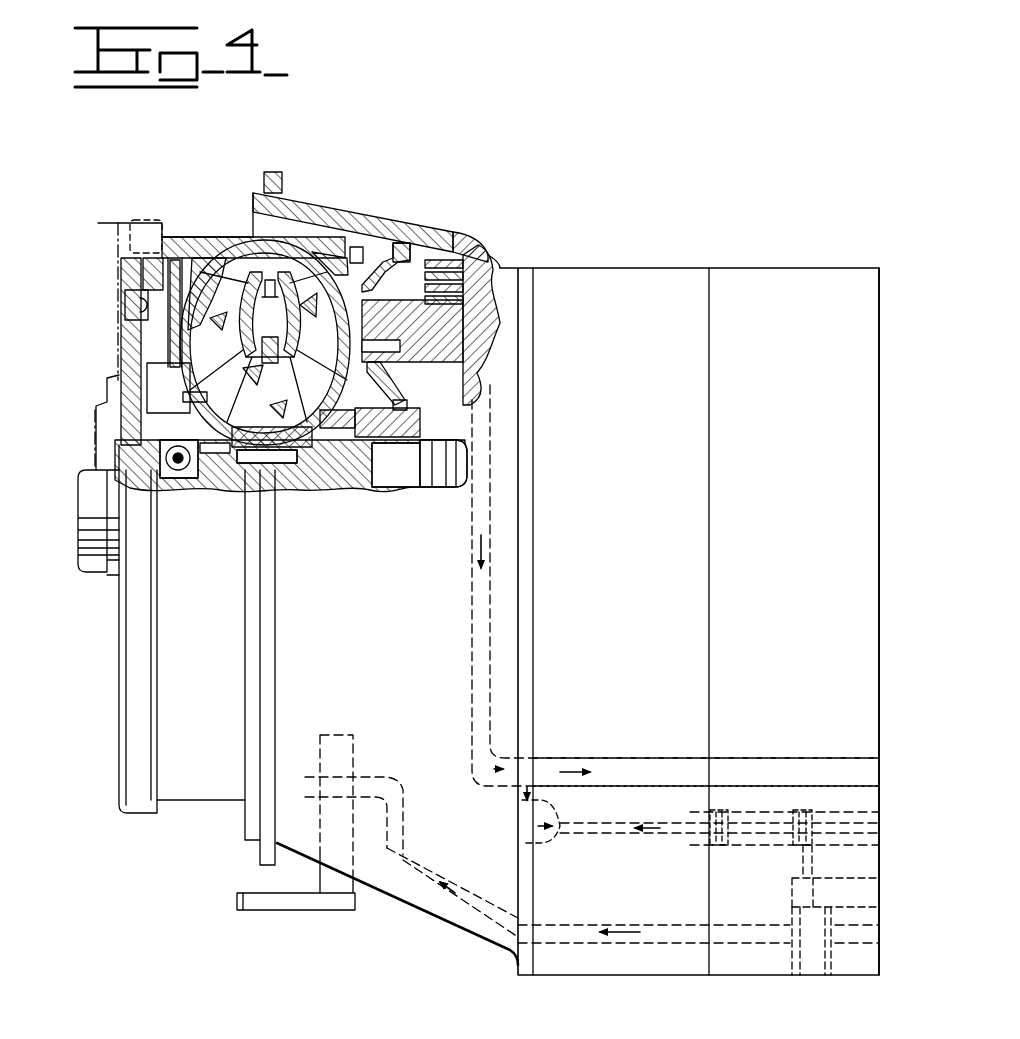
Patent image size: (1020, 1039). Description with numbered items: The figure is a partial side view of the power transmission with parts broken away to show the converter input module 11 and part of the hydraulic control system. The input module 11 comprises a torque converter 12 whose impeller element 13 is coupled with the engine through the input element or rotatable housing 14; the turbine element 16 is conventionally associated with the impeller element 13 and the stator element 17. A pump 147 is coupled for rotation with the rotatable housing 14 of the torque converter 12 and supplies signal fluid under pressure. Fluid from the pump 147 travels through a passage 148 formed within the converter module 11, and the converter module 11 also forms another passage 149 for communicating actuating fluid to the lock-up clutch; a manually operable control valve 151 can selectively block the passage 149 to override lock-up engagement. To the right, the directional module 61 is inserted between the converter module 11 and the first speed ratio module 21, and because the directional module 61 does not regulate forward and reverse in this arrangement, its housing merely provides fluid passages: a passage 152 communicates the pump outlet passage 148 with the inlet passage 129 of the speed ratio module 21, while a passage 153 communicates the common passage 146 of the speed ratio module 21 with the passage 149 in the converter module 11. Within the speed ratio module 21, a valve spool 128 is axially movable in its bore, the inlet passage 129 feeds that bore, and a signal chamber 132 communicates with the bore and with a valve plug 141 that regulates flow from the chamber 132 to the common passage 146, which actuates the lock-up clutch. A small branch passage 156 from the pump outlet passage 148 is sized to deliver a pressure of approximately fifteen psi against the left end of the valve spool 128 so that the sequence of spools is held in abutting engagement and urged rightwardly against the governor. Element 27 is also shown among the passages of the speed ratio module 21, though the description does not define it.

The input module 11 is at (372, 584).
The torque converter 12 is at (286, 232).
The impeller element 13 is at (330, 358).
The rotatable housing 14 is at (237, 247).
The turbine element 16 is at (230, 364).
The stator element 17 is at (265, 421).
The first speed ratio module 21 is at (781, 404).
The pipe 27 is at (778, 843).
The directional module 61 is at (619, 404).
The valve spool 128 is at (840, 830).
The inlet passage 129 is at (722, 773).
The signal chamber 132 is at (790, 890).
The valve plug 141 is at (812, 965).
The common passage 146 is at (790, 937).
The pump 147 is at (445, 270).
The passage 148 is at (478, 593).
The passage 149 is at (392, 788).
The control valve 151 is at (338, 740).
The passage 152 is at (540, 768).
The passage 153 is at (627, 928).
The branch passage 156 is at (522, 806).